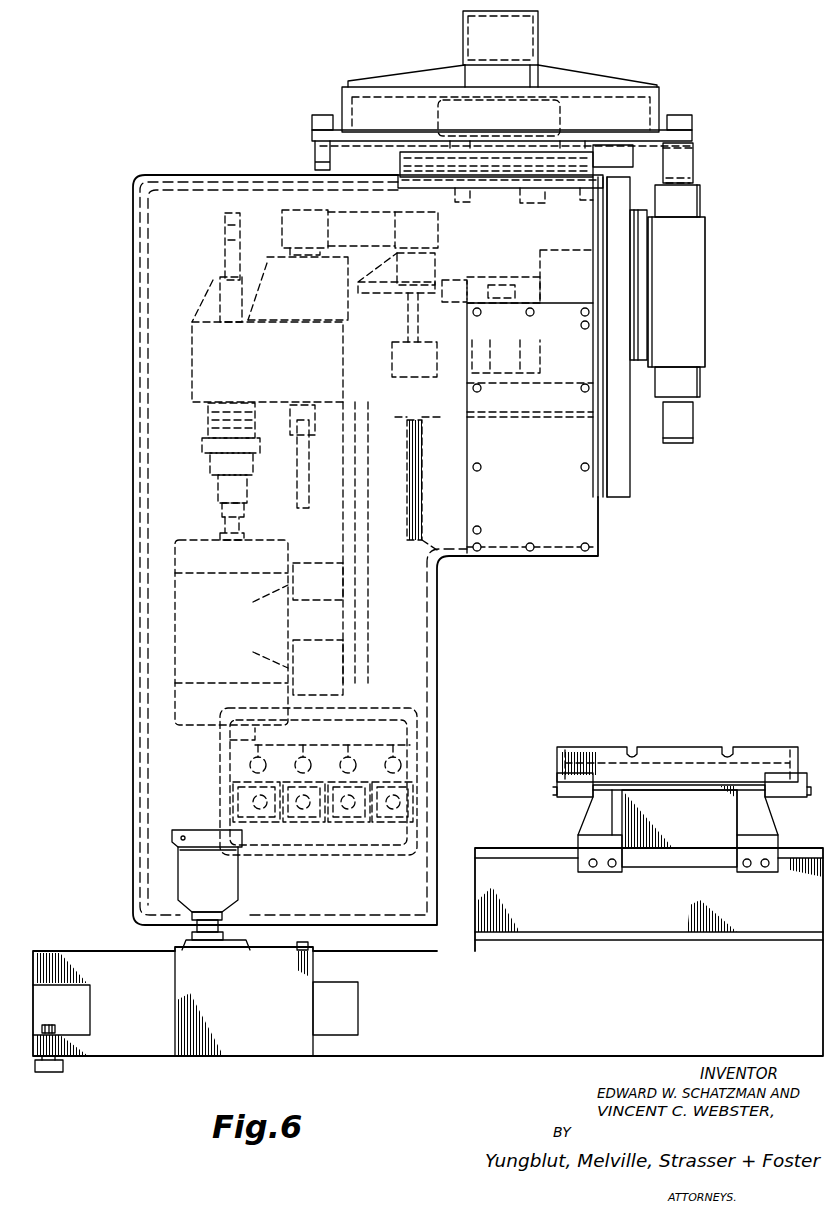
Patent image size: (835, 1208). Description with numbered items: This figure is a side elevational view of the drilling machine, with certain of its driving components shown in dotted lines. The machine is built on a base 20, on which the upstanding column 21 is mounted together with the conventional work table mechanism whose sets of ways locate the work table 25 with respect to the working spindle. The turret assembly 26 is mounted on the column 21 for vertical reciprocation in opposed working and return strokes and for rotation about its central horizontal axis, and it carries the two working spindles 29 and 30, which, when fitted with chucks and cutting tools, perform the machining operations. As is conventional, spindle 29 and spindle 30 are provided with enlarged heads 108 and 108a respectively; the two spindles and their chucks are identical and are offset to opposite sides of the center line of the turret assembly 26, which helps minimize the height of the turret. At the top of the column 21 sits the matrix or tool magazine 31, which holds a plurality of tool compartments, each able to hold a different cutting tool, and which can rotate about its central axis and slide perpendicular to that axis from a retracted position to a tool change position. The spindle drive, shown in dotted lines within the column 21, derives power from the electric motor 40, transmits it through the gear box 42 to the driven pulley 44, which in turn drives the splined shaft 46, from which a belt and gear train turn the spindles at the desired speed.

The base 20 is at (437, 1060).
The column 21 is at (122, 422).
The work table 25 is at (661, 746).
The turret assembly 26 is at (710, 312).
The working spindle 29 is at (701, 385).
The working spindle 30 is at (701, 200).
The tool magazine 31 is at (610, 75).
The electric motor 40 is at (178, 630).
The gear box 42 is at (207, 363).
The driven pulley 44 is at (297, 223).
The splined shaft 46 is at (441, 550).
The enlarged head 108 is at (694, 425).
The enlarged head 108a is at (694, 163).